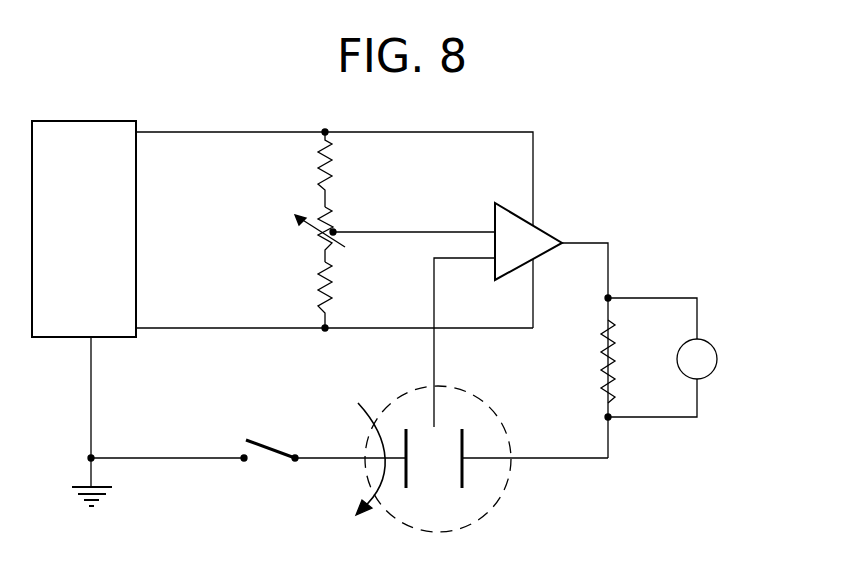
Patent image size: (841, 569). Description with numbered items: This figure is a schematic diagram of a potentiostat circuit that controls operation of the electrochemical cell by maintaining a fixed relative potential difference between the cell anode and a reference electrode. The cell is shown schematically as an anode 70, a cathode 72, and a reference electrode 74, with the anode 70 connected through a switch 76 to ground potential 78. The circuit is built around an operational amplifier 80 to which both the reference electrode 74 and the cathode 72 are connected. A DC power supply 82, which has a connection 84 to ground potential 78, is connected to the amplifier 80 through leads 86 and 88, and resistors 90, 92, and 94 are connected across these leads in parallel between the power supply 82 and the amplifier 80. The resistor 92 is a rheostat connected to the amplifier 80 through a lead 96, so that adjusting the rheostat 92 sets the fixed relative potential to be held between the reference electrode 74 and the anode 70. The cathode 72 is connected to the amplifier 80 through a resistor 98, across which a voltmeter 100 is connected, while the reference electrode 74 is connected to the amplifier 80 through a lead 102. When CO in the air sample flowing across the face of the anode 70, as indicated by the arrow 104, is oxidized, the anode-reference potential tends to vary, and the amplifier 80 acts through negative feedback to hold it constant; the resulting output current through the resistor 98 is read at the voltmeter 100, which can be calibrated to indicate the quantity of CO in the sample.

The anode 70 is at (408, 472).
The cathode 72 is at (465, 470).
The reference electrode 74 is at (436, 410).
The switch 76 is at (265, 441).
The ground potential 78 is at (104, 496).
The operational amplifier 80 is at (542, 222).
The DC power supply 82 is at (92, 121).
The connection 84 is at (91, 389).
The lead 86 is at (220, 132).
The lead 88 is at (205, 330).
The resistor 90 is at (320, 172).
The rheostat 92 is at (312, 232).
The resistor 94 is at (322, 289).
The lead 96 is at (425, 232).
The resistor 98 is at (612, 366).
The voltmeter 100 is at (718, 365).
The lead 102 is at (434, 292).
The arrow 104 is at (380, 500).